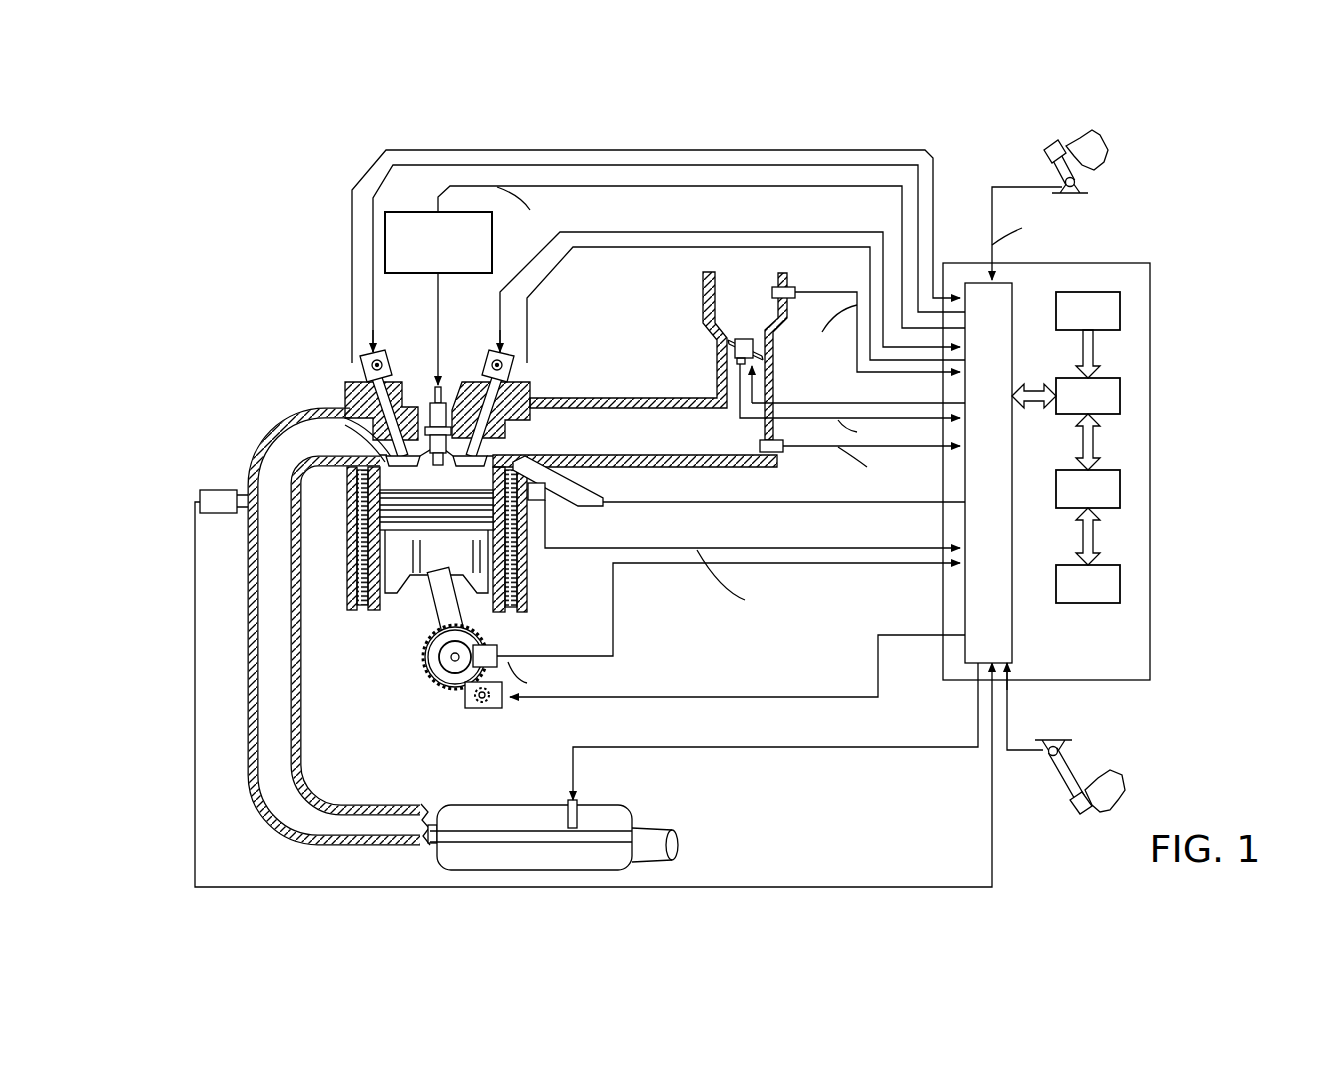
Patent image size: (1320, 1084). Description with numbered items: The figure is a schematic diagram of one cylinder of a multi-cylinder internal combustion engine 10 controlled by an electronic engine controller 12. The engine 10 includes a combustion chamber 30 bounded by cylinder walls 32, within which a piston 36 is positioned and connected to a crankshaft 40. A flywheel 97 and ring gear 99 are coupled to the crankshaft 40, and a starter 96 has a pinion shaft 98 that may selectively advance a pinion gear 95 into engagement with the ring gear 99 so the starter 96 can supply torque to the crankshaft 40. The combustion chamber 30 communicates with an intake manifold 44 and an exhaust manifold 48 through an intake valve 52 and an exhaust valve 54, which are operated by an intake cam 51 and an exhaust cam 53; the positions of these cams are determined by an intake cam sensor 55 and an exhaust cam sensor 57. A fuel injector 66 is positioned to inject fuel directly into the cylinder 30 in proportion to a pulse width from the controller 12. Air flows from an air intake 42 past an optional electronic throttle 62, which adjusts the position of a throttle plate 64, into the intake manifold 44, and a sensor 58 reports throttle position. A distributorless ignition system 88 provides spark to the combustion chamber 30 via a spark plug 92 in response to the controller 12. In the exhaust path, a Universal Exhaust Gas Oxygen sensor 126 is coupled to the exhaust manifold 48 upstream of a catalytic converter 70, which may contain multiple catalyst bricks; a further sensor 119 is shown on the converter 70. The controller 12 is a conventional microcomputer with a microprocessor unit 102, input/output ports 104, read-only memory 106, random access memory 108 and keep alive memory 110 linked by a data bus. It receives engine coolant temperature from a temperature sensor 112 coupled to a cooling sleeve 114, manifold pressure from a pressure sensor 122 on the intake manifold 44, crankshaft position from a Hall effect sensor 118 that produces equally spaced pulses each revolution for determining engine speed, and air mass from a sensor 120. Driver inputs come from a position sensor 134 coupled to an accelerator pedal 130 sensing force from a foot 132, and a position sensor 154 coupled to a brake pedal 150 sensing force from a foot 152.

The internal combustion engine 10 is at (290, 340).
The electronic engine controller 12 is at (1150, 265).
The combustion chamber 30 is at (437, 470).
The cylinder walls 32 is at (375, 605).
The piston 36 is at (430, 572).
The crankshaft 40 is at (450, 685).
The air intake 42 is at (730, 316).
The intake manifold 44 is at (673, 444).
The exhaust manifold 48 is at (303, 448).
The intake cam 51 is at (496, 348).
The intake valve 52 is at (500, 438).
The exhaust cam 53 is at (383, 348).
The exhaust valve 54 is at (347, 410).
The intake cam sensor 55 is at (508, 372).
The exhaust cam sensor 57 is at (362, 365).
The throttle position sensor 58 is at (735, 363).
The electronic throttle 62 is at (765, 350).
The throttle plate 64 is at (727, 347).
The fuel injector 66 is at (560, 497).
The catalytic converter 70 is at (440, 800).
The distributorless ignition system 88 is at (402, 212).
The spark plug 92 is at (447, 383).
The pinion gear 95 is at (490, 712).
The starter 96 is at (500, 708).
The flywheel 97 is at (425, 655).
The pinion shaft 98 is at (470, 710).
The ring gear 99 is at (455, 697).
The microprocessor unit 102 is at (1120, 400).
The input/output ports 104 is at (1015, 290).
The read-only memory 106 is at (1120, 315).
The random access memory 108 is at (1120, 495).
The keep alive memory 110 is at (1120, 590).
The temperature sensor 112 is at (545, 502).
The cooling sleeve 114 is at (513, 563).
The Hall effect sensor 118 is at (497, 648).
The exhaust gas sensor 119 is at (580, 800).
The air mass sensor 120 is at (795, 287).
The pressure sensor 122 is at (783, 452).
The Universal Exhaust Gas Oxygen sensor 126 is at (200, 490).
The accelerator pedal 130 is at (1048, 162).
The foot 132 is at (1100, 150).
The position sensor 134 is at (1080, 190).
The brake pedal 150 is at (1072, 790).
The foot 152 is at (1110, 770).
The position sensor 154 is at (1043, 745).